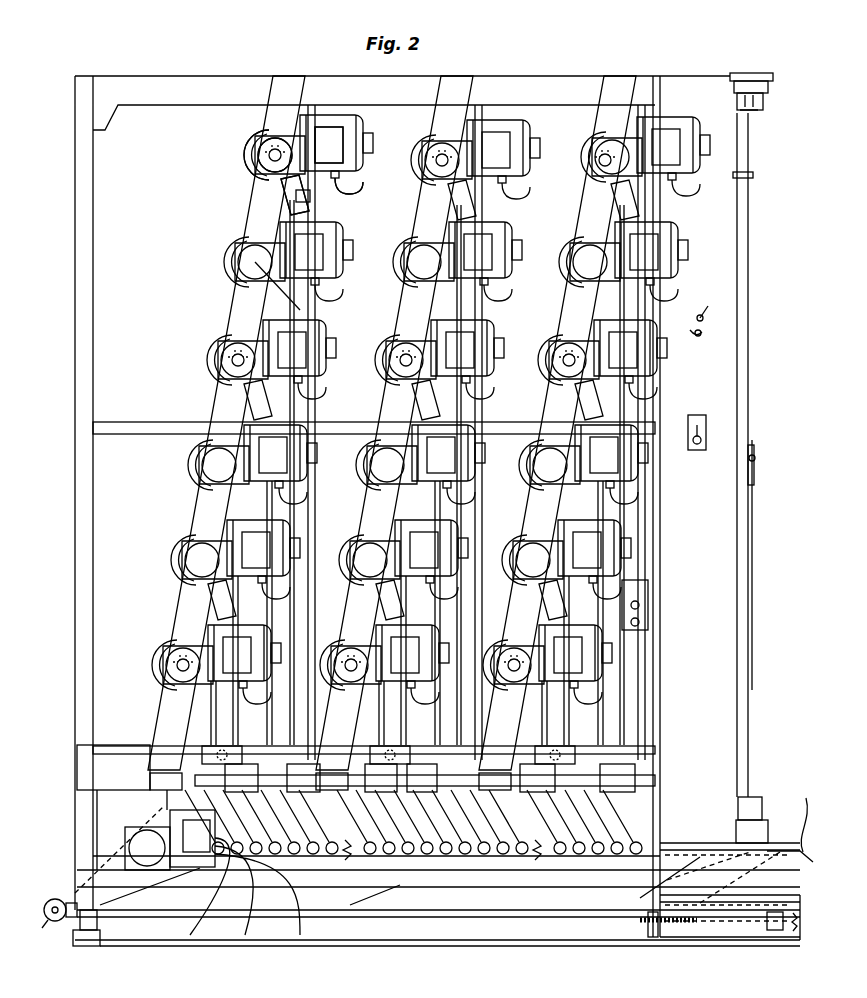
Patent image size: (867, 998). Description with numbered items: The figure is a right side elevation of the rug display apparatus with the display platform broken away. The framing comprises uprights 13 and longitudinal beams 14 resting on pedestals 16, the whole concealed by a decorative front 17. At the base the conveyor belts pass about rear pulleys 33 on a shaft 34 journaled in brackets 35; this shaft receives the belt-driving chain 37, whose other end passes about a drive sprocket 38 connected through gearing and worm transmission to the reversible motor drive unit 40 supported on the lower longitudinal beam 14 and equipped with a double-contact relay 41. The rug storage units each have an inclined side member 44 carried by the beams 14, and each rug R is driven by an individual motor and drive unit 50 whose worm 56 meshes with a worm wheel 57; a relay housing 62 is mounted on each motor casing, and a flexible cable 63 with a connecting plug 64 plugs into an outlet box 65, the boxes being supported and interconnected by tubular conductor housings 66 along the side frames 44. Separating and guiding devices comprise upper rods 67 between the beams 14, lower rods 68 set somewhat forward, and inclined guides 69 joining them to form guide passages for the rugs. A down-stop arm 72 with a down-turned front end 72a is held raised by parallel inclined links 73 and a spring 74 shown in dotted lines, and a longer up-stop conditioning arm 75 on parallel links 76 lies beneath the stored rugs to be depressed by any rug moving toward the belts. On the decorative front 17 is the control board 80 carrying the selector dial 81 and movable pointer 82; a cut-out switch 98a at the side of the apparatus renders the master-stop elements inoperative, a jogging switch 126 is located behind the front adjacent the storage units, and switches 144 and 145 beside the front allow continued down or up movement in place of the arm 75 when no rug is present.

The uprights 13 is at (80, 150).
The longitudinal beams 14 is at (190, 88).
The pedestals 16 is at (90, 940).
The decorative front 17 is at (742, 216).
The rear pulleys 33 is at (35, 933).
The shaft 34 is at (43, 910).
The brackets 35 is at (68, 920).
The belt-driving chain 37 is at (70, 880).
The drive sprocket 38 is at (128, 845).
The motor drive unit 40 is at (172, 818).
The double-contact circuit closing relay 41 is at (208, 858).
The side member 44 is at (258, 200).
The spindle unit 50 is at (360, 135).
The worm 56 is at (268, 138).
The worm wheel 57 is at (255, 172).
The relay housing 62 is at (330, 130).
The flexible cable 63 is at (352, 182).
The connecting plug 64 is at (296, 193).
The outlet box 65 is at (290, 200).
The tubular conductor housings 66 is at (272, 300).
The upper rods 67 is at (200, 755).
The lower rods 68 is at (435, 855).
The inclined guides 69 is at (322, 820).
The arm 72 is at (784, 850).
The down-turned front end 72a is at (801, 820).
The inclined links 73 is at (668, 870).
The spring 74 is at (620, 928).
The vertically movable arm 75 is at (516, 858).
The parallel links 76 is at (405, 890).
The control board 80 is at (750, 515).
The dial 81 is at (752, 500).
The pointer 82 is at (756, 458).
The cut-out switch 98a is at (697, 415).
The jogging switch 126 is at (645, 600).
The switch 144 is at (697, 318).
The switch 145 is at (716, 300).
The rug R is at (316, 515).